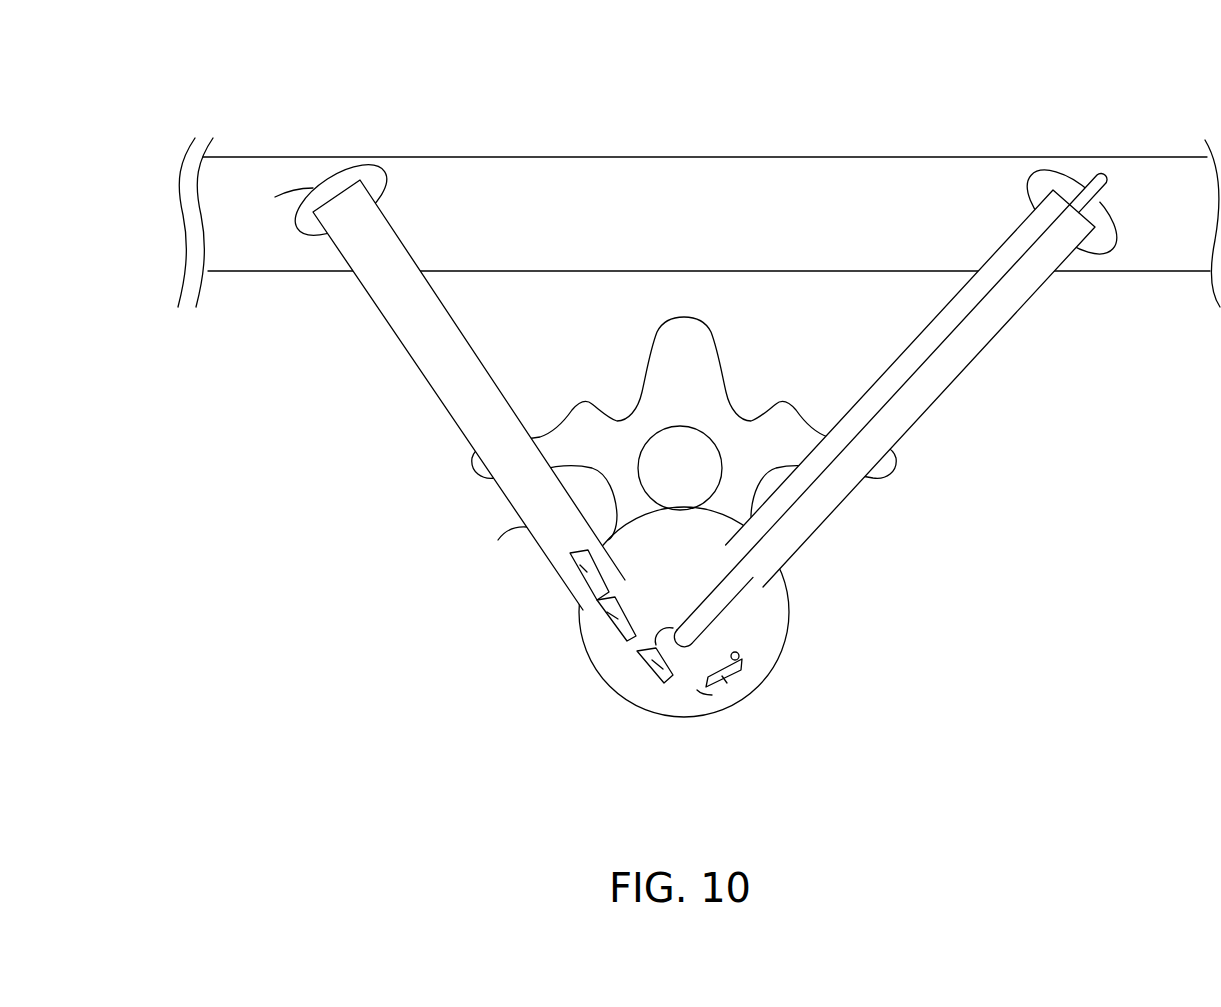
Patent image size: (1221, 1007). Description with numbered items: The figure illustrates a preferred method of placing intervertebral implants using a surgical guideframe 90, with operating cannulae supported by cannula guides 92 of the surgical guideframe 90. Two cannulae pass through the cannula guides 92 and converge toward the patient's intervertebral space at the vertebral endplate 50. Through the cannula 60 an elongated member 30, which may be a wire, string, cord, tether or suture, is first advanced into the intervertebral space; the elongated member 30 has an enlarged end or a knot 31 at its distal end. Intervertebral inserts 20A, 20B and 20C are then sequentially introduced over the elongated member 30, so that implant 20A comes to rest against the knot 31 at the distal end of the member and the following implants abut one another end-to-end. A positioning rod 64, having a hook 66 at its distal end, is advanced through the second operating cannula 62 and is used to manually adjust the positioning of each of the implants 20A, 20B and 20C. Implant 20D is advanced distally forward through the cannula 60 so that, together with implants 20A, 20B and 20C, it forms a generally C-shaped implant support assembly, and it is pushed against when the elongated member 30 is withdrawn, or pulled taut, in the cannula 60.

The surgical guideframe 90 is at (702, 180).
The cannula guides 92 is at (372, 180).
The cannula 60 is at (520, 527).
The second operating cannula 62 is at (1000, 332).
The positioning rod 64 is at (880, 422).
The hook 66 is at (672, 628).
The vertebral endplate 50 is at (615, 670).
The intervertebral insert 20A is at (733, 677).
The intervertebral insert 20B is at (673, 688).
The intervertebral insert 20C is at (613, 615).
The implant 20D is at (577, 572).
The elongated member 30 is at (697, 690).
The knot 31 is at (740, 658).